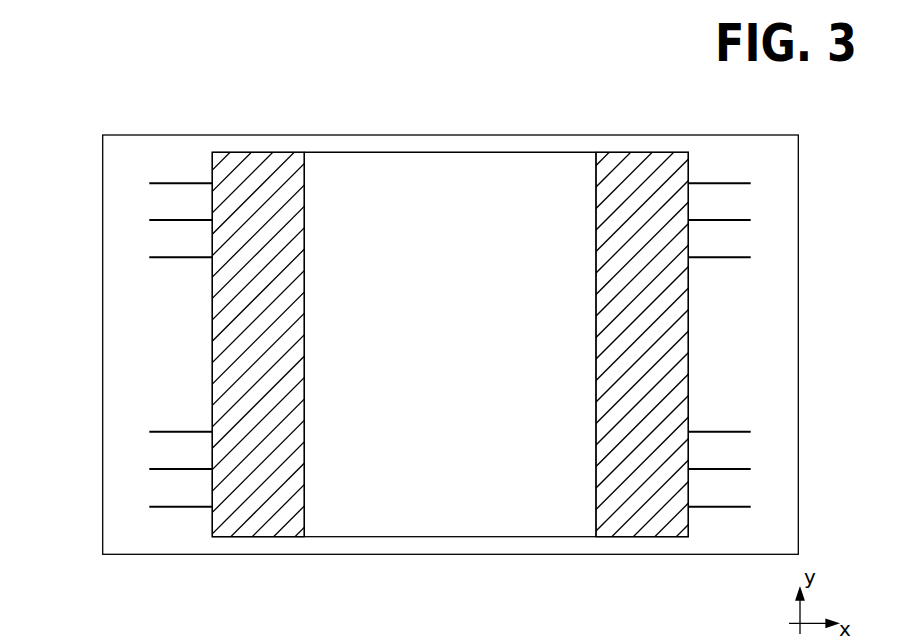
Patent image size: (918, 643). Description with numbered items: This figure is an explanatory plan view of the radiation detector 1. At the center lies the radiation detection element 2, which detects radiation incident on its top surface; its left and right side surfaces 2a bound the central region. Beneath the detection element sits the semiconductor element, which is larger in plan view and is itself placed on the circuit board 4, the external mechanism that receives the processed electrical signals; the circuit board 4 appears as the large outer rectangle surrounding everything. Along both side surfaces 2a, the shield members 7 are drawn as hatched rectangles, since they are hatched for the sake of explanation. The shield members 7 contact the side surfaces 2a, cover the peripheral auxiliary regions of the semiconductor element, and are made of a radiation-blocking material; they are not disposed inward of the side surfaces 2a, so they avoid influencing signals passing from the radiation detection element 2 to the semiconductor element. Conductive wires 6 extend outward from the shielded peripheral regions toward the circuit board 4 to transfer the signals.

The radiation detector 1 is at (80, 152).
The radiation detection element 2 is at (392, 537).
The side surfaces of the radiation detection element 2a is at (436, 152).
The circuit board 4 is at (513, 554).
The conductive wires 6 is at (728, 507).
The shield members 7 is at (212, 318).